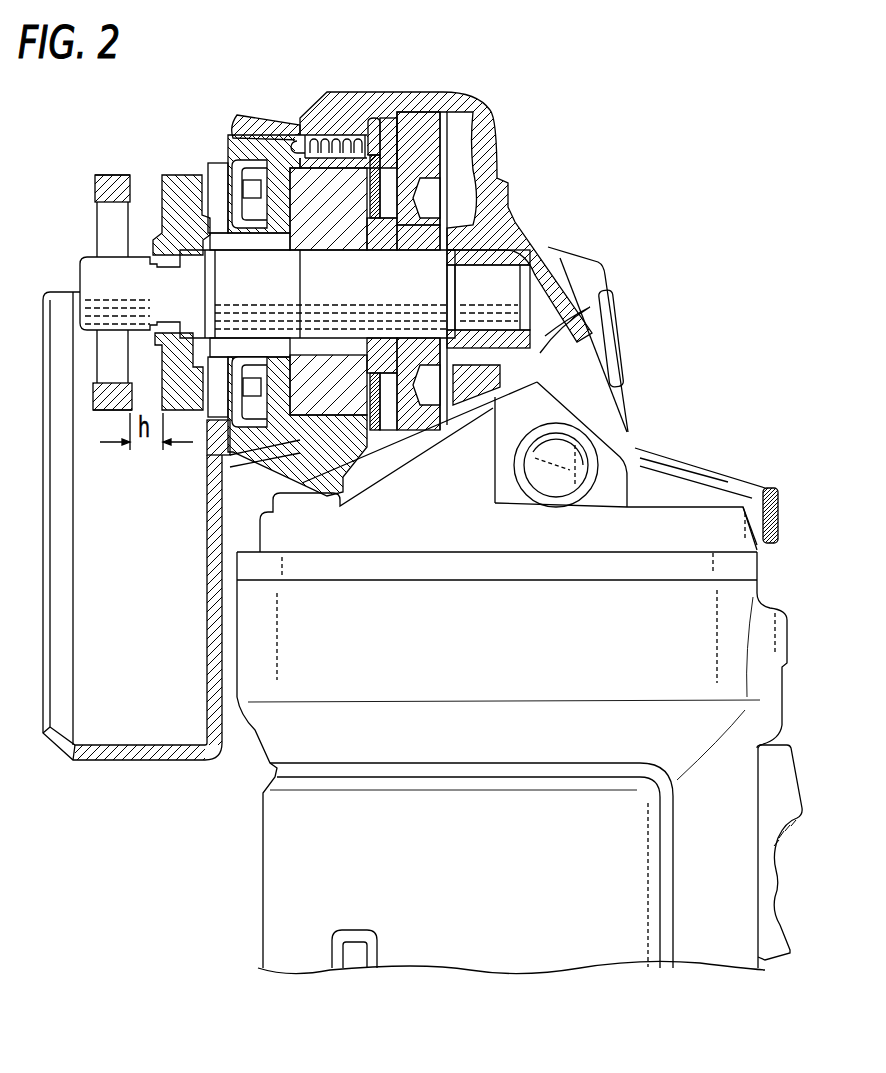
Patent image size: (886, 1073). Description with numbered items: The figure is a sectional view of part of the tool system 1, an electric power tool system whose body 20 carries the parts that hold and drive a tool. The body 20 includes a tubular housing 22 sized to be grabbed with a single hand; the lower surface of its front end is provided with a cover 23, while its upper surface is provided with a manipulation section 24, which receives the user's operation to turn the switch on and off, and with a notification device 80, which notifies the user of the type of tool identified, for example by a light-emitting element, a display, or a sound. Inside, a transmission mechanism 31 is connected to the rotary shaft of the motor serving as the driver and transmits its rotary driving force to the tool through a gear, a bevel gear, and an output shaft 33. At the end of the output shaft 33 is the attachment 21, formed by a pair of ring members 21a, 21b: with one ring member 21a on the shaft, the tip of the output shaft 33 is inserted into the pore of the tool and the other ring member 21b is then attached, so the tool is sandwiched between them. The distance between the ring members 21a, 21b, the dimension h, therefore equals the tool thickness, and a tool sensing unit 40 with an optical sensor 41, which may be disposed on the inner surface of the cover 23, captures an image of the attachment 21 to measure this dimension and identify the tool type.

The tool system 1 is at (760, 677).
The body 20 is at (288, 888).
The attachment 21 is at (97, 192).
The ring member 21a is at (182, 177).
The ring member 21b is at (108, 177).
The housing 22 is at (460, 913).
The cover 23 is at (115, 753).
The manipulation section 24 is at (788, 797).
The transmission mechanism 31 is at (495, 280).
The output shaft 33 is at (258, 252).
The tool sensing unit 40 is at (206, 460).
The optical sensor 41 is at (210, 450).
The notification device 80 is at (779, 517).